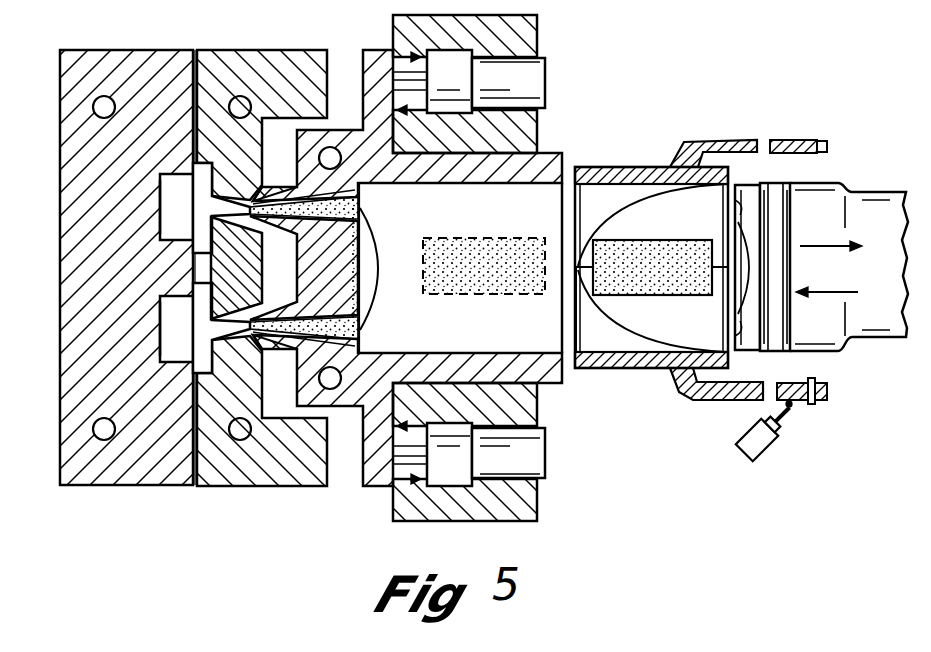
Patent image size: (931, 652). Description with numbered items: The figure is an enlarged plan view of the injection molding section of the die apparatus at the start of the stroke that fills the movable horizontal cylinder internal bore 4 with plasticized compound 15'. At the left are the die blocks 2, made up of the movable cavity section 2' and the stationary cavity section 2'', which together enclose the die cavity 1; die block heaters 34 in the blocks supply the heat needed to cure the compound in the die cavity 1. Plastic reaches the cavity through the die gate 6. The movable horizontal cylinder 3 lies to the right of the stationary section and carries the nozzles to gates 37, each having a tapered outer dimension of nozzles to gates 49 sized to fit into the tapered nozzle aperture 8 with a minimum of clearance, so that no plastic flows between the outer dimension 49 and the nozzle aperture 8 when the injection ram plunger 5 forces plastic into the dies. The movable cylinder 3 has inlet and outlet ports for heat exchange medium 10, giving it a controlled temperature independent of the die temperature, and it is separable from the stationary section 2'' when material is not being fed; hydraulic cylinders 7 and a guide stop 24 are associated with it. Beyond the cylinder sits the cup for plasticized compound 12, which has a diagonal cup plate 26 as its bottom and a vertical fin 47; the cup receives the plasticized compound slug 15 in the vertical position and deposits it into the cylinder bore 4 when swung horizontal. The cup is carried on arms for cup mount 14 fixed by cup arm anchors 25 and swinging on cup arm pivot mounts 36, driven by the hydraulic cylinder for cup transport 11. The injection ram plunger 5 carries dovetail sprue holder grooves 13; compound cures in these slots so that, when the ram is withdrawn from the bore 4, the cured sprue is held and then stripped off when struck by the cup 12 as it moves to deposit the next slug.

The die cavity 1 is at (158, 205).
The die blocks 2 is at (179, 285).
The movable cavity section 2' is at (126, 285).
The stationary cavity section 2'' is at (262, 284).
The movable horizontal cylinder 3 is at (554, 166).
The movable horizontal cylinder internal bore 4 is at (451, 184).
The injection ram plunger 5 is at (836, 183).
The die gate 6 is at (235, 173).
The hydraulic cylinders 7 is at (548, 90).
The nozzle aperture 8 is at (250, 196).
The inlet and outlet ports for heat exchange medium 10 is at (350, 132).
The hydraulic cylinder for cup transport 11 is at (758, 456).
The cup for plasticized compound 12 is at (627, 368).
The dovetail sprue holder grooves 13 is at (738, 328).
The arms for cup mount 14 is at (700, 140).
The plasticized compound slug 15 is at (567, 253).
The plasticized compound 15' is at (329, 268).
The guide stop 24 is at (540, 20).
The cup arm anchors 25 is at (672, 167).
The diagonal cup plate 26 is at (617, 216).
The die block heaters 34 is at (97, 100).
The cup arm pivot mounts 36 is at (820, 140).
The nozzles to gates 37 is at (304, 261).
The vertical fin 47 is at (584, 356).
The outer dimension of nozzles to gates 49 is at (290, 182).